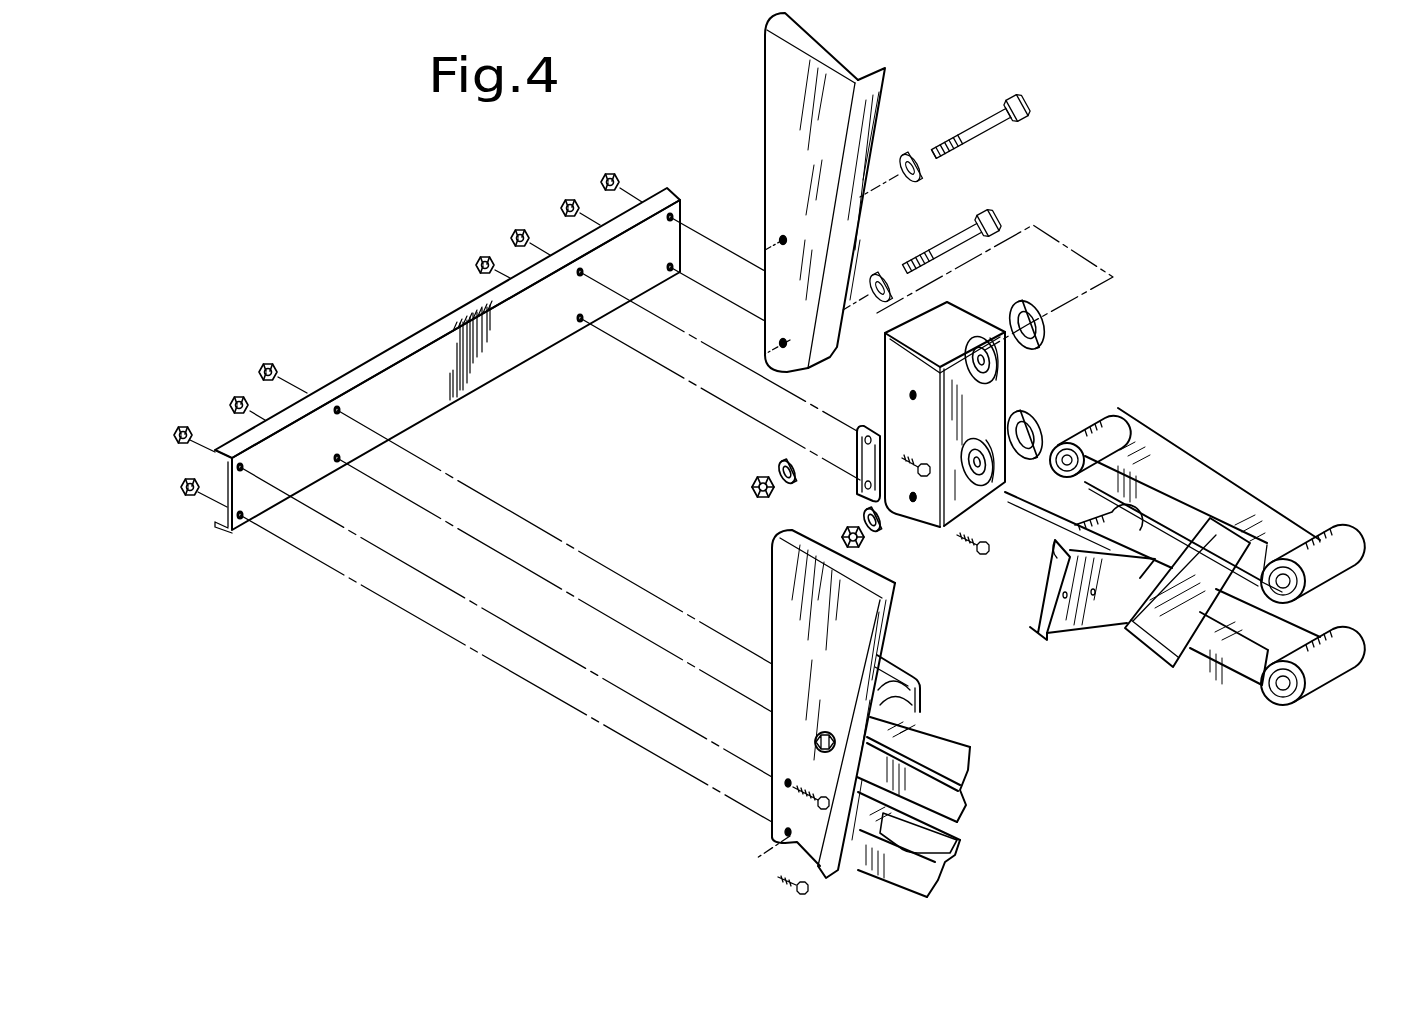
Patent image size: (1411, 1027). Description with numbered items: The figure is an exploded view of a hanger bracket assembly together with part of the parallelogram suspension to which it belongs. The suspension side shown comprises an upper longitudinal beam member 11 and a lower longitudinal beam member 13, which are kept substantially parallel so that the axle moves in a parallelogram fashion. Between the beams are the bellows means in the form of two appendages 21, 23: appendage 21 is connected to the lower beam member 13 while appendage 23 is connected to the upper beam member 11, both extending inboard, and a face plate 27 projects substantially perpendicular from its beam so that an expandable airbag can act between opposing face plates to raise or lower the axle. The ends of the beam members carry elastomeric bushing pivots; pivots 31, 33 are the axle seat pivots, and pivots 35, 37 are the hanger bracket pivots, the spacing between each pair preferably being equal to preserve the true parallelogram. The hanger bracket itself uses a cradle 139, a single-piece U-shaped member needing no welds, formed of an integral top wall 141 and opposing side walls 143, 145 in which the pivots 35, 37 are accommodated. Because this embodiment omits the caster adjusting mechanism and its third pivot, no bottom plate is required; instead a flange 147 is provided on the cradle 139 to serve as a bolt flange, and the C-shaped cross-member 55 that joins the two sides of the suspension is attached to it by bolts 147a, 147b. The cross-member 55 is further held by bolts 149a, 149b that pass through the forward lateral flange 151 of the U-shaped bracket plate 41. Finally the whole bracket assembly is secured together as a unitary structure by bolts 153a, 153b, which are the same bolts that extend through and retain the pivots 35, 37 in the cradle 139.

The upper longitudinal beam member 11 is at (1195, 477).
The lower longitudinal beam member 13 is at (1293, 628).
The appendage 21 is at (1047, 604).
The appendage 23 is at (1140, 628).
The face plate 27 is at (1063, 627).
The axle seat pivot 31 is at (1337, 550).
The axle seat pivot 33 is at (1340, 648).
The hanger bracket pivot 35 is at (1130, 422).
The hanger bracket pivot 37 is at (1117, 513).
The bracket plate 41 is at (810, 166).
The cross-member 55 is at (406, 416).
The cradle 139 is at (1031, 375).
The top wall 141 is at (953, 343).
The side wall 143 is at (928, 439).
The side wall 145 is at (998, 419).
The flange 147 is at (872, 428).
The bolt 147a is at (962, 549).
The bolt 147b is at (918, 499).
The bolt 149a is at (784, 832).
The bolt 149b is at (778, 880).
The forward lateral flange 151 is at (793, 31).
The bolt 153a is at (970, 126).
The bolt 153b is at (953, 246).